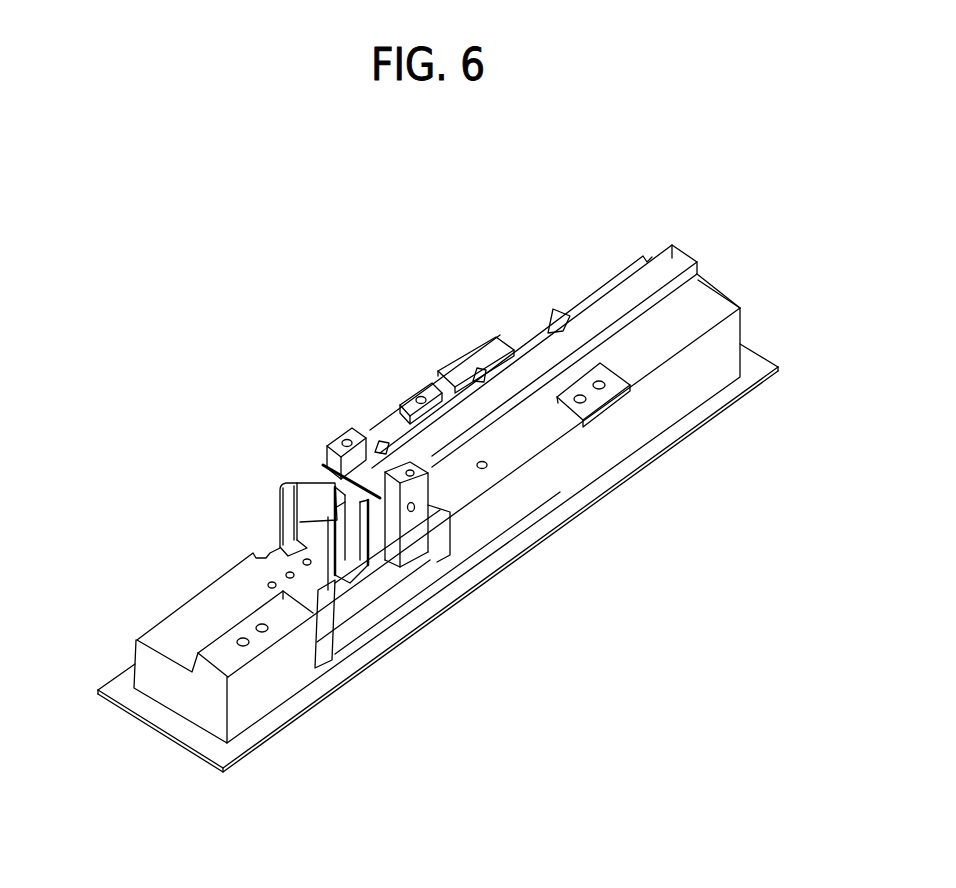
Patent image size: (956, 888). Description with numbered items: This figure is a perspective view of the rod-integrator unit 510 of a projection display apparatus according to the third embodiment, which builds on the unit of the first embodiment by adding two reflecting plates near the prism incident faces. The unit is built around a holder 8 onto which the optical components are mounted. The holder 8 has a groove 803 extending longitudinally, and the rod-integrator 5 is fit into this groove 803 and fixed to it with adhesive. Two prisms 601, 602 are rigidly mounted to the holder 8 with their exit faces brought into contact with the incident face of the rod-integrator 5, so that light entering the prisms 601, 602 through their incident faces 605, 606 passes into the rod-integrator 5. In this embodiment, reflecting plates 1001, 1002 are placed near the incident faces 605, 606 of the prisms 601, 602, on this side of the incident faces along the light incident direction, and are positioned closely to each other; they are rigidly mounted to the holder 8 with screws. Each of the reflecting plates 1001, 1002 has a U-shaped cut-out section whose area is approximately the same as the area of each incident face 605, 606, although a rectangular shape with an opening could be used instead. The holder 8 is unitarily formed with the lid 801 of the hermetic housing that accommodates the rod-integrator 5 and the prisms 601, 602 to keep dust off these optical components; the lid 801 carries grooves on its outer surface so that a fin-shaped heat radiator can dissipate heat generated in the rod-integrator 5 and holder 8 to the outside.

The rod-integrator unit 510 is at (167, 296).
The rod-integrator 5 is at (618, 297).
The groove 803 is at (722, 300).
The holder 8 is at (555, 485).
The lid 801 is at (153, 727).
The prism 602 is at (328, 473).
The incident face 606 is at (323, 470).
The reflecting plate 1002 is at (280, 515).
The reflecting plate 1001 is at (342, 575).
The incident face 605 is at (362, 578).
The prism 601 is at (377, 500).